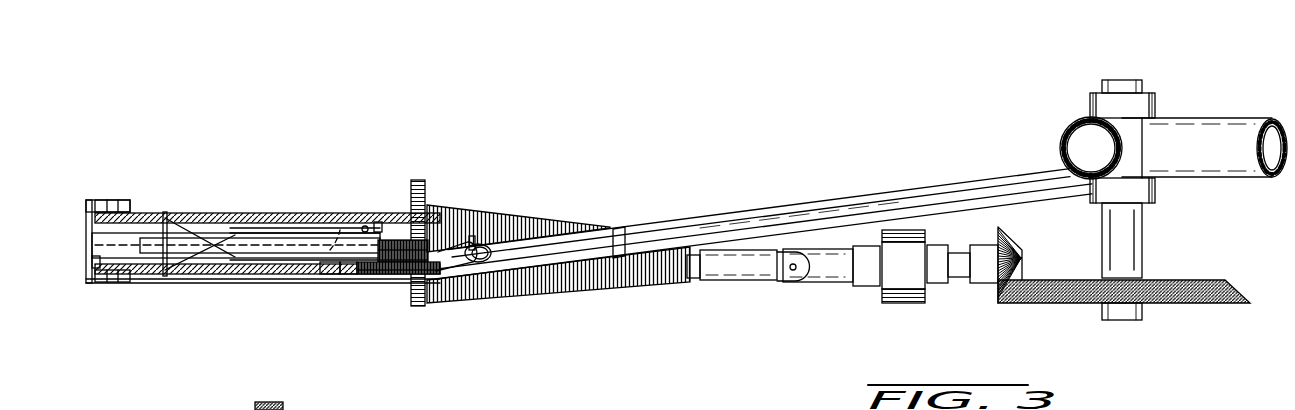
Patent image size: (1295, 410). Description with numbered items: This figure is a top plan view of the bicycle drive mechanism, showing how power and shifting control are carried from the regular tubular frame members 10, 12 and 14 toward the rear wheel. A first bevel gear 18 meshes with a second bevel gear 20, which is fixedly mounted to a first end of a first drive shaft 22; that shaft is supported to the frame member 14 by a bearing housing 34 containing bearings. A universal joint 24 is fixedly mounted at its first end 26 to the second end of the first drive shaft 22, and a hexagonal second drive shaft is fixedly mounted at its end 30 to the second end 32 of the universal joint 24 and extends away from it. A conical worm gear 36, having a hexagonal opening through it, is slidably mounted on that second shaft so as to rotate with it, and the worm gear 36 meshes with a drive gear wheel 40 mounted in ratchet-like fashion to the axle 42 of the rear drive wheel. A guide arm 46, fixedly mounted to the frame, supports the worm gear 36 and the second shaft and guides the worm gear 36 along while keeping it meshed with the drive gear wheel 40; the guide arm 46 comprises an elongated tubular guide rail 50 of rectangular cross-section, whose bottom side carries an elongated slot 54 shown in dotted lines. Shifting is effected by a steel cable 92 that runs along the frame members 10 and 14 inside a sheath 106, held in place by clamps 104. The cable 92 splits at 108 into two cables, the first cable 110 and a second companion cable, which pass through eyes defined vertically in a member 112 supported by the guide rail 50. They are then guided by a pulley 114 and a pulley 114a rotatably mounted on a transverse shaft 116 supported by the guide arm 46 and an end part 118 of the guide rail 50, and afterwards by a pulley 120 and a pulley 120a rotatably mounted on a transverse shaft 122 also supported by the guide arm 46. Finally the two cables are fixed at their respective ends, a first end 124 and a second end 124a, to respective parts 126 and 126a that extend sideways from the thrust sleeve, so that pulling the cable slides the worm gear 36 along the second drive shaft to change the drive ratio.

The frame member 10 is at (1225, 135).
The frame member 12 is at (1068, 125).
The frame member 14 is at (933, 197).
The first bevel gear 18 is at (1163, 288).
The second bevel gear 20 is at (1023, 249).
The first drive shaft 22 is at (958, 277).
The universal joint 24 is at (782, 288).
The first end of the universal joint 26 is at (842, 284).
The end of the second drive shaft 30 is at (697, 277).
The second end of the universal joint 32 is at (717, 278).
The bearing housing 34 is at (903, 289).
The conical worm gear 36 is at (577, 282).
The drive gear wheel 40 is at (433, 248).
The axle 42 is at (427, 188).
The guide arm 46 is at (278, 285).
The guide rail 50 is at (302, 266).
The elongated slot 54 is at (336, 250).
The steel cable 92 is at (305, 238).
The clamp 104 is at (618, 231).
The sheath 106 is at (710, 233).
The cable split point 108 is at (206, 248).
The cable 110 is at (183, 233).
The member 112 is at (167, 277).
The pulley 114 is at (142, 214).
The pulley 114a is at (130, 274).
The transverse shaft 116 is at (160, 214).
The end part of the guide rail 118 is at (88, 262).
The pulley 120 is at (87, 206).
The pulley 120a is at (108, 282).
The transverse shaft 122 is at (103, 203).
The end of cable 124 is at (360, 222).
The end of cable 124a is at (352, 276).
The part of the thrust sleeve 126 is at (364, 226).
The part of the thrust sleeve 126a is at (363, 274).